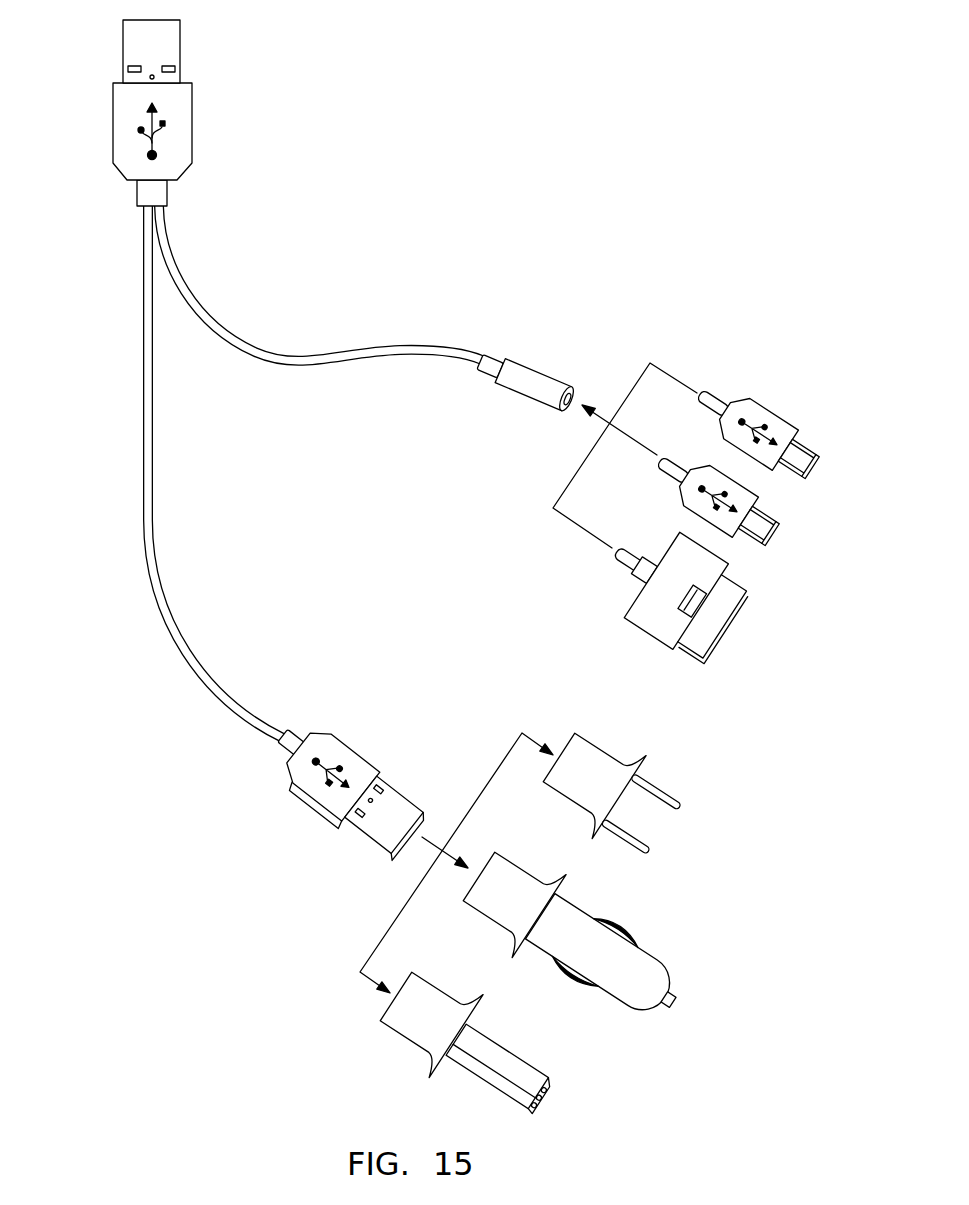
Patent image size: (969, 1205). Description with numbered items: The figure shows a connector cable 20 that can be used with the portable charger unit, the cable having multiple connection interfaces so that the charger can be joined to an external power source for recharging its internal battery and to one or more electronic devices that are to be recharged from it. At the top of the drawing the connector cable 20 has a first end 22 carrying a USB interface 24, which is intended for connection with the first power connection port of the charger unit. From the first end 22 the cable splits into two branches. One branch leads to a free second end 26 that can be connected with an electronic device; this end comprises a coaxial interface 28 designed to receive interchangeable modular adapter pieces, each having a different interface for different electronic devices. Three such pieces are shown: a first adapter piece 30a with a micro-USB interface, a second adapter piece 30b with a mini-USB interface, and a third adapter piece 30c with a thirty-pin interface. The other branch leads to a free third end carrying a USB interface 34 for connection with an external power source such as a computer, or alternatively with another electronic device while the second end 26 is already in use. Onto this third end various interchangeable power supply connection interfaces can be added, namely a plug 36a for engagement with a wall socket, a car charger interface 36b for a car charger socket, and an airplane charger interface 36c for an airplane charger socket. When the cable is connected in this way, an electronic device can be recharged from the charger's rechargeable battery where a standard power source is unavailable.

The connector cable 20 is at (375, 236).
The first end 22 is at (261, 455).
The USB interface 24 is at (163, 42).
The free second end 26 is at (517, 367).
The coaxial interface 28 is at (529, 387).
The first adapter piece 30a is at (750, 415).
The second adapter piece 30b is at (705, 478).
The third adapter piece 30c is at (672, 558).
The USB interface 34 is at (398, 808).
The plug 36a is at (597, 762).
The car charger interface 36b is at (512, 882).
The airplane charger interface 36c is at (428, 1003).